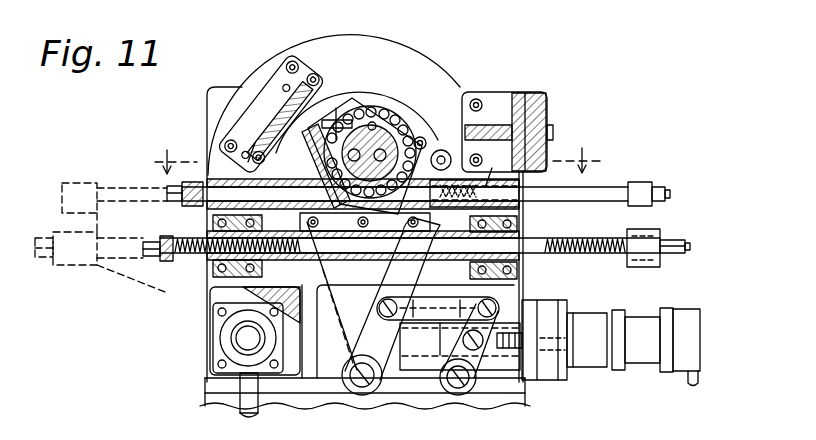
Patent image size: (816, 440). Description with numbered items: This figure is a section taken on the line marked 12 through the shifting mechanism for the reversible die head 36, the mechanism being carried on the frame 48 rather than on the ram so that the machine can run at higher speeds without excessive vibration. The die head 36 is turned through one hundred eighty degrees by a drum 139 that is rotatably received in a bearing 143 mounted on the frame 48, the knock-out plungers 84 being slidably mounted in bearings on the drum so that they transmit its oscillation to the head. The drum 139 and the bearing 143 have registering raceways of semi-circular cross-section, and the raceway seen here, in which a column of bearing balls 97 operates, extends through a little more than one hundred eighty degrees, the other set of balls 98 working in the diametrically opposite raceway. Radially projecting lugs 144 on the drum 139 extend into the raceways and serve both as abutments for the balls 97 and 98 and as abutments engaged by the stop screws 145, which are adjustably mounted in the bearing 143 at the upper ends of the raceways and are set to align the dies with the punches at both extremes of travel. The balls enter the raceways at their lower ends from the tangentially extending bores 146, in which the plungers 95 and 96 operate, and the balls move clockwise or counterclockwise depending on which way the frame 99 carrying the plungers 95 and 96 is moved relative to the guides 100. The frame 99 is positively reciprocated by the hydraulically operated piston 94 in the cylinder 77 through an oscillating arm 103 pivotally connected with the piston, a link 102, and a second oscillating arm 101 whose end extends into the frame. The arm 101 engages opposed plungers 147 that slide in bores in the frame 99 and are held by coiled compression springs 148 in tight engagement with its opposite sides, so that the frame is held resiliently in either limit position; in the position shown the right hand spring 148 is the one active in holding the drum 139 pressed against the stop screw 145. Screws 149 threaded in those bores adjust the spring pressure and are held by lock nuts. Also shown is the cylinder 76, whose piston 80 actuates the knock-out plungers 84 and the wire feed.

The section line 12 is at (379, 153).
The die head 36 is at (441, 152).
The frame 48 is at (445, 79).
The cylinder 76 is at (222, 333).
The cylinder 77 is at (637, 362).
The piston 80 is at (240, 340).
The knock-out plunger 84 is at (350, 120).
The piston 94 is at (541, 333).
The plunger 95 is at (118, 190).
The plunger 96 is at (607, 190).
The bearing balls 97 is at (340, 170).
The bearing balls 98 is at (381, 224).
The frame 99 is at (185, 270).
The guides 100 is at (514, 271).
The oscillating arm 101 is at (396, 279).
The link 102 is at (440, 303).
The oscillating arm 103 is at (478, 352).
The drum 139 is at (402, 127).
The bearing 143 is at (424, 140).
The radially projecting lugs 144 is at (372, 122).
The stop screws 145 is at (308, 118).
The tangentially extending bores 146 is at (377, 154).
The opposed plungers 147 is at (337, 248).
The coiled compression springs 148 is at (250, 240).
The screws 149 is at (152, 242).